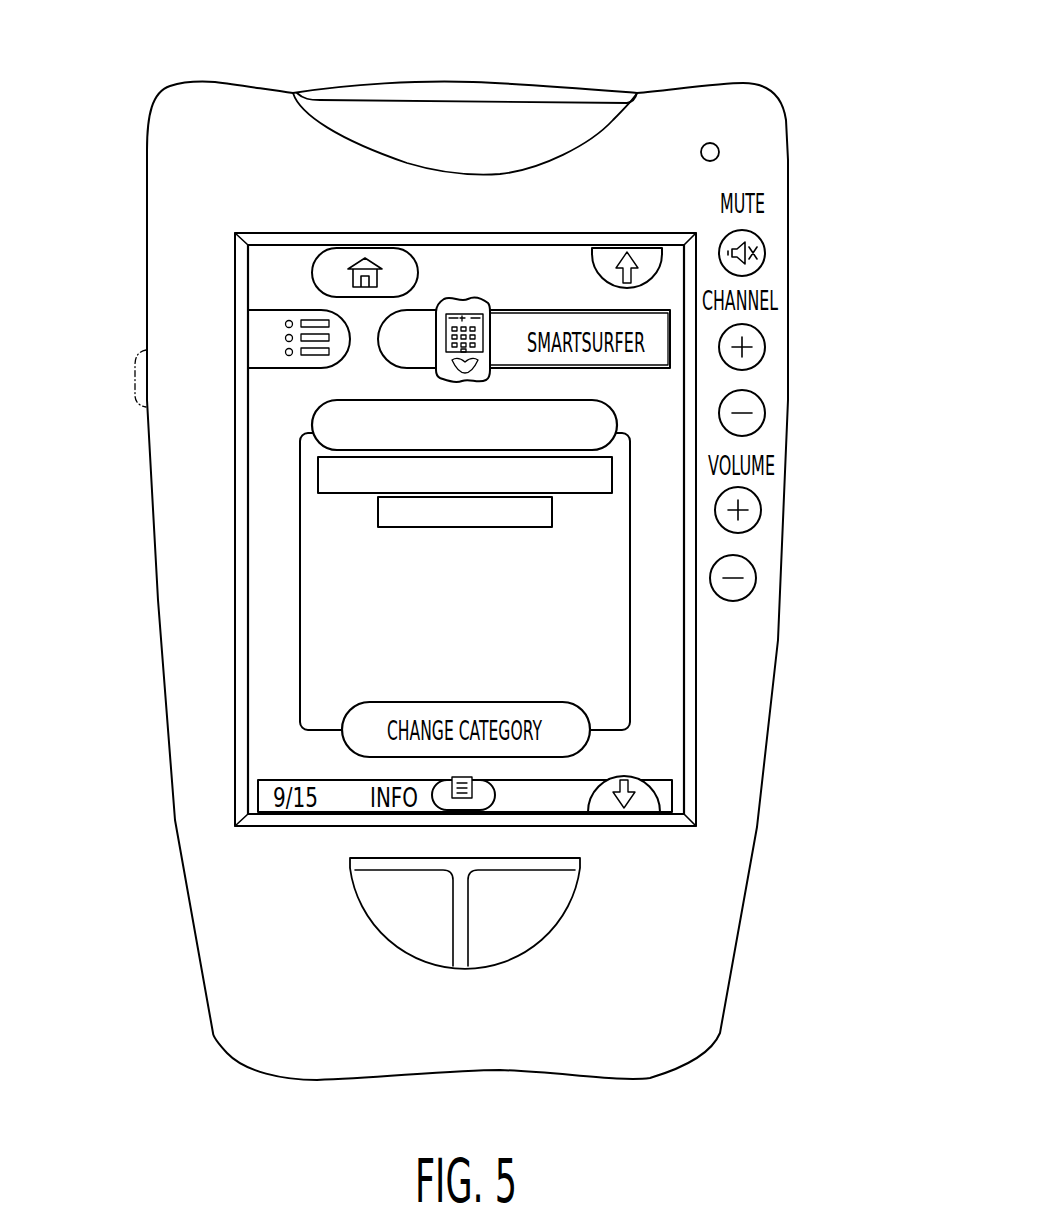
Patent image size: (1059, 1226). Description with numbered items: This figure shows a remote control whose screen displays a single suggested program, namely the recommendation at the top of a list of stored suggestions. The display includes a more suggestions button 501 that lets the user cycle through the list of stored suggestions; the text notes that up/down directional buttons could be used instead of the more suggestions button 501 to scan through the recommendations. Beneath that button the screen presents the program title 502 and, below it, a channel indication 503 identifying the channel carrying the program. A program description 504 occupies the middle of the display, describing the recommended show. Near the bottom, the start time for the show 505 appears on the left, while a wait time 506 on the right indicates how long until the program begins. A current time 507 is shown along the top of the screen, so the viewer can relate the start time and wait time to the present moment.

The more suggestions button 501 is at (610, 415).
The program title 502 is at (317, 477).
The channel indication 503 is at (393, 510).
The program description 504 is at (303, 600).
The start time for the show 505 is at (303, 683).
The wait time 506 is at (630, 684).
The current time 507 is at (535, 253).